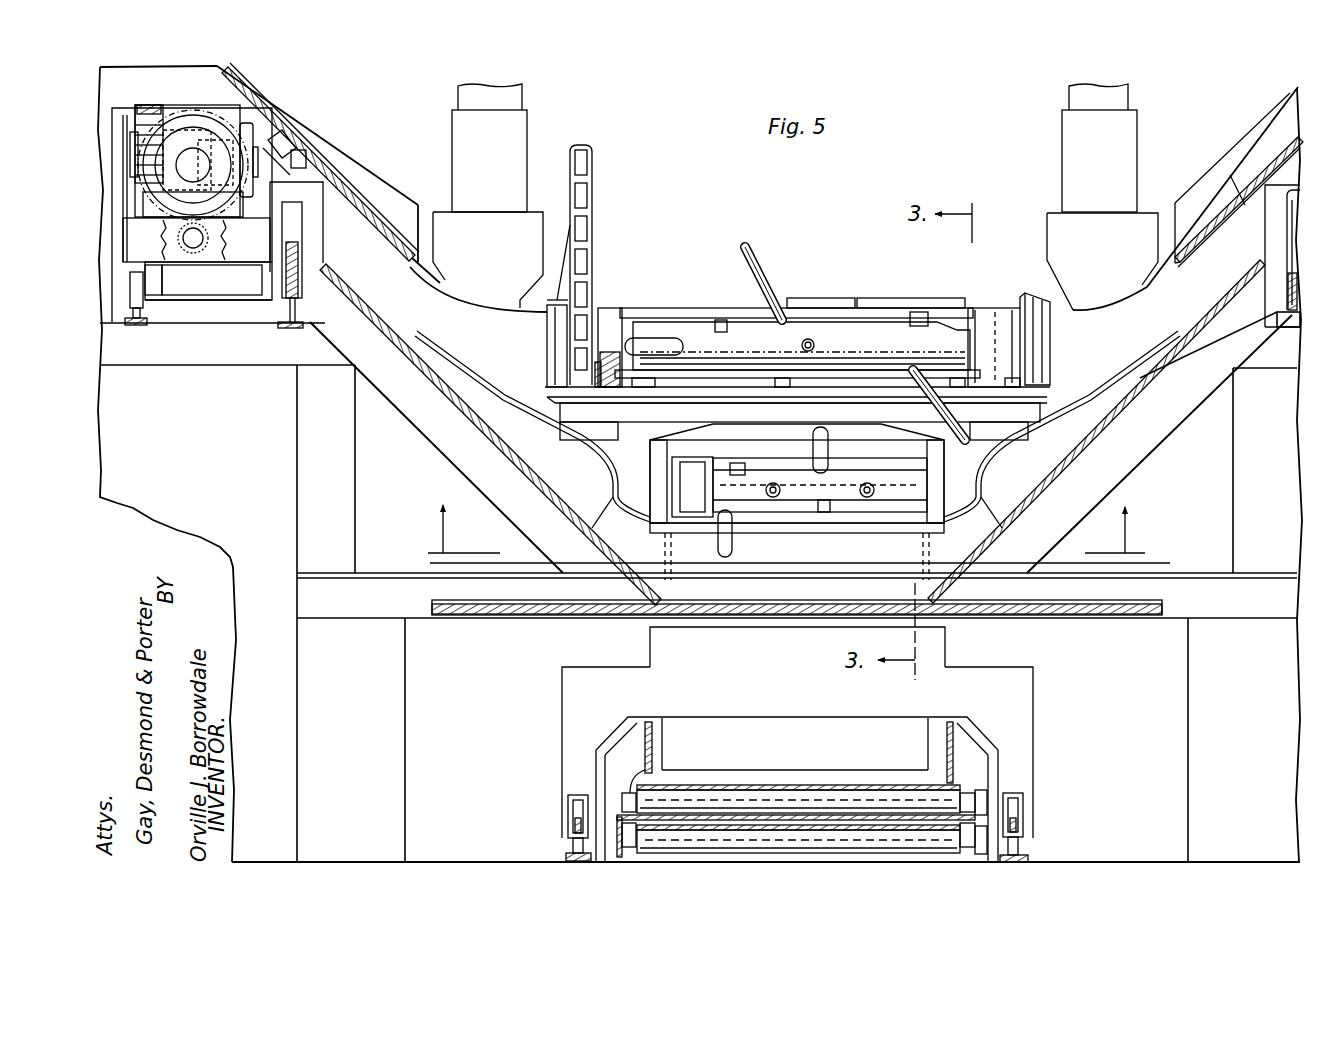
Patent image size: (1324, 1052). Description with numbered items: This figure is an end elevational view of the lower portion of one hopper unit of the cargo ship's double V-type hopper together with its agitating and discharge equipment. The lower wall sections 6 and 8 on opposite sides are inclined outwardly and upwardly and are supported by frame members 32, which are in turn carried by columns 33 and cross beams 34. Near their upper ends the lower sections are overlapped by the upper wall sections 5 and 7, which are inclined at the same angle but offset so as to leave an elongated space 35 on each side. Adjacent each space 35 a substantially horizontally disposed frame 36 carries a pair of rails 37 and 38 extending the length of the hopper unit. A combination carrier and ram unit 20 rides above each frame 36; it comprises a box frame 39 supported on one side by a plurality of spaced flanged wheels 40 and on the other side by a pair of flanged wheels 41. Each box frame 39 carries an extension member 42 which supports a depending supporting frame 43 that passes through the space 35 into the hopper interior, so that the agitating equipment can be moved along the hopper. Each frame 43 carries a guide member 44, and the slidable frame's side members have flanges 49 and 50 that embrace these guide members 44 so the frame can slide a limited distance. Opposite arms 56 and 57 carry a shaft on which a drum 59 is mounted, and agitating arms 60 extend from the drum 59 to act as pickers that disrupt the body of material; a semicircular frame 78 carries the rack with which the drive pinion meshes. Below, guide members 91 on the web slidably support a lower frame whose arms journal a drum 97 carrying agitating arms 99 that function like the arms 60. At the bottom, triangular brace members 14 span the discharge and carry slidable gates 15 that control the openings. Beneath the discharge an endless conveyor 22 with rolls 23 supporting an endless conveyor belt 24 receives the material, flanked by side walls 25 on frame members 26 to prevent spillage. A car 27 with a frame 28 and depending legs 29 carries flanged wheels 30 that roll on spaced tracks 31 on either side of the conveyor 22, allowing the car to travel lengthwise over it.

The inclined wall 5 is at (285, 130).
The inclined wall 6 is at (467, 420).
The inclined wall 7 is at (1243, 193).
The inclined wall 8 is at (1118, 418).
The brace member 14 is at (812, 594).
The gate 15 is at (742, 600).
The combination carrier and ram unit 20 is at (262, 116).
The endless conveyor 22 is at (935, 782).
The roll 23 is at (830, 845).
The endless conveyor belt 24 is at (750, 786).
The side wall 25 is at (650, 730).
The frame member 26 is at (622, 735).
The car 27 is at (1040, 683).
The frame 28 is at (962, 667).
The depending leg 29 is at (562, 757).
The flanged wheel 30 is at (578, 808).
The track 31 is at (574, 850).
The frame member 32 is at (352, 505).
The column 33 is at (297, 704).
The cross beam 34 is at (1130, 578).
The elongated space 35 is at (368, 194).
The horizontally disposed frame 36 is at (205, 368).
The rail 37 is at (150, 320).
The rail 38 is at (290, 324).
The box frame 39 is at (222, 300).
The flanged wheel 40 is at (130, 283).
The flanged wheel 41 is at (300, 232).
The extension member 42 is at (300, 158).
The depending supporting frame 43 is at (408, 290).
The guide member 44 is at (547, 350).
The flange 49 is at (1040, 298).
The flange 50 is at (553, 300).
The arm 56 is at (606, 312).
The arm 57 is at (983, 313).
The drum 59 is at (718, 322).
The agitating arm 60 is at (770, 263).
The semicircular frame 78 is at (580, 145).
The guide member 91 is at (656, 480).
The drum 97 is at (755, 520).
The agitating arm 99 is at (718, 548).